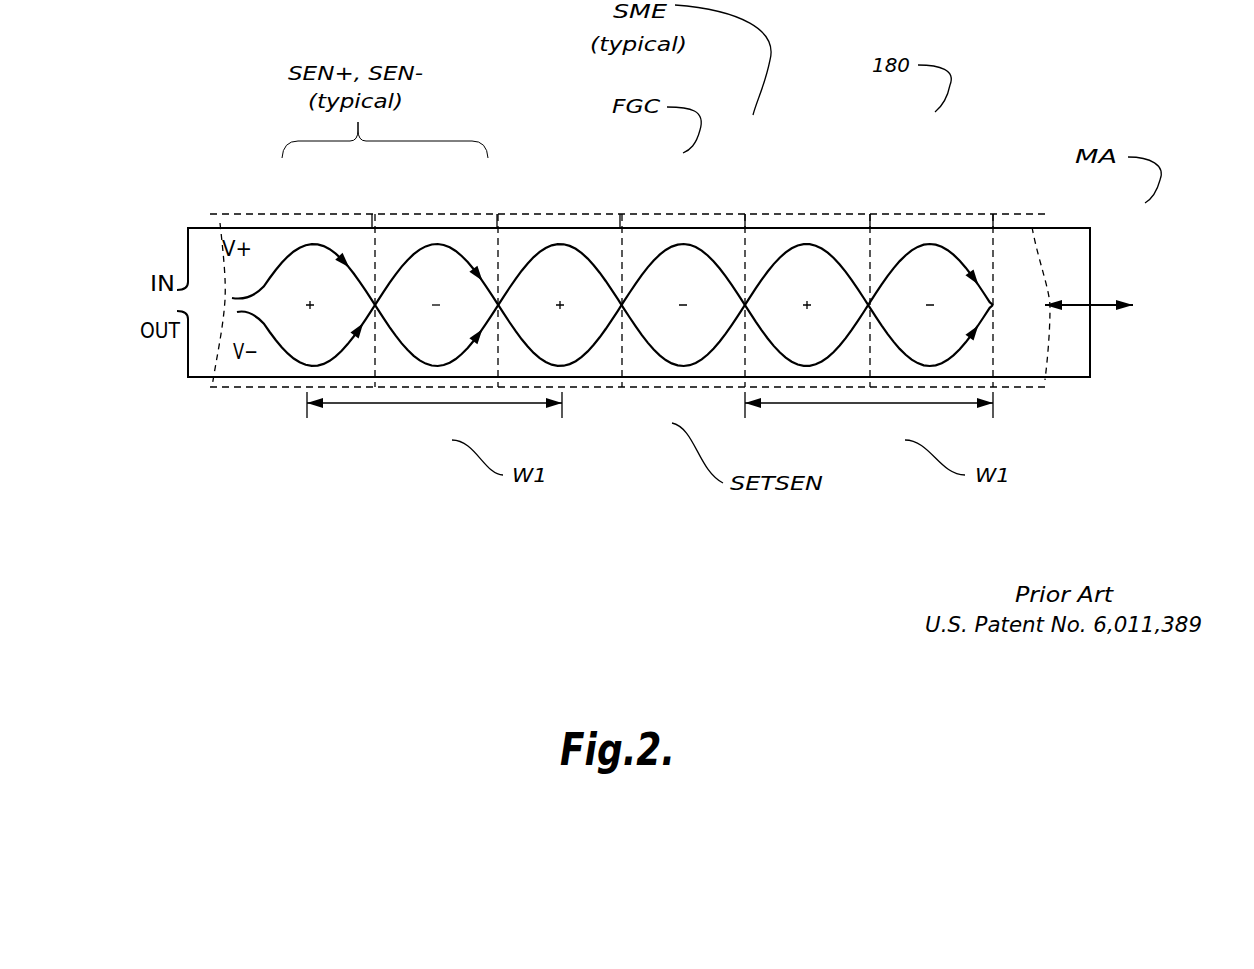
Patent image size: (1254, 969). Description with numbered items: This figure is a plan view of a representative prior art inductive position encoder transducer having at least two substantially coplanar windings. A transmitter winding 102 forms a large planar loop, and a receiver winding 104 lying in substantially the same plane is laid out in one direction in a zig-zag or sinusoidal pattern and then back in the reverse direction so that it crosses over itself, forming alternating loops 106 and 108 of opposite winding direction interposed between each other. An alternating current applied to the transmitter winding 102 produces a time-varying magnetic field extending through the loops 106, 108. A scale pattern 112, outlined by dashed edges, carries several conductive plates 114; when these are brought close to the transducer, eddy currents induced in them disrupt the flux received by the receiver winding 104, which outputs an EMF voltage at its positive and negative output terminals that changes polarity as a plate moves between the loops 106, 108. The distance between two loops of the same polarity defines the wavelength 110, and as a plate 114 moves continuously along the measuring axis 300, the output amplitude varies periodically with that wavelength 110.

The transmitter winding 102 is at (593, 228).
The receiver winding 104 is at (587, 350).
The positive polarity loop 106 is at (310, 265).
The negative polarity loop 108 is at (432, 262).
The wavelength 110 is at (400, 405).
The scale pattern 112 is at (857, 217).
The conductive plate 114 is at (490, 214).
The measuring axis 300 is at (1102, 305).